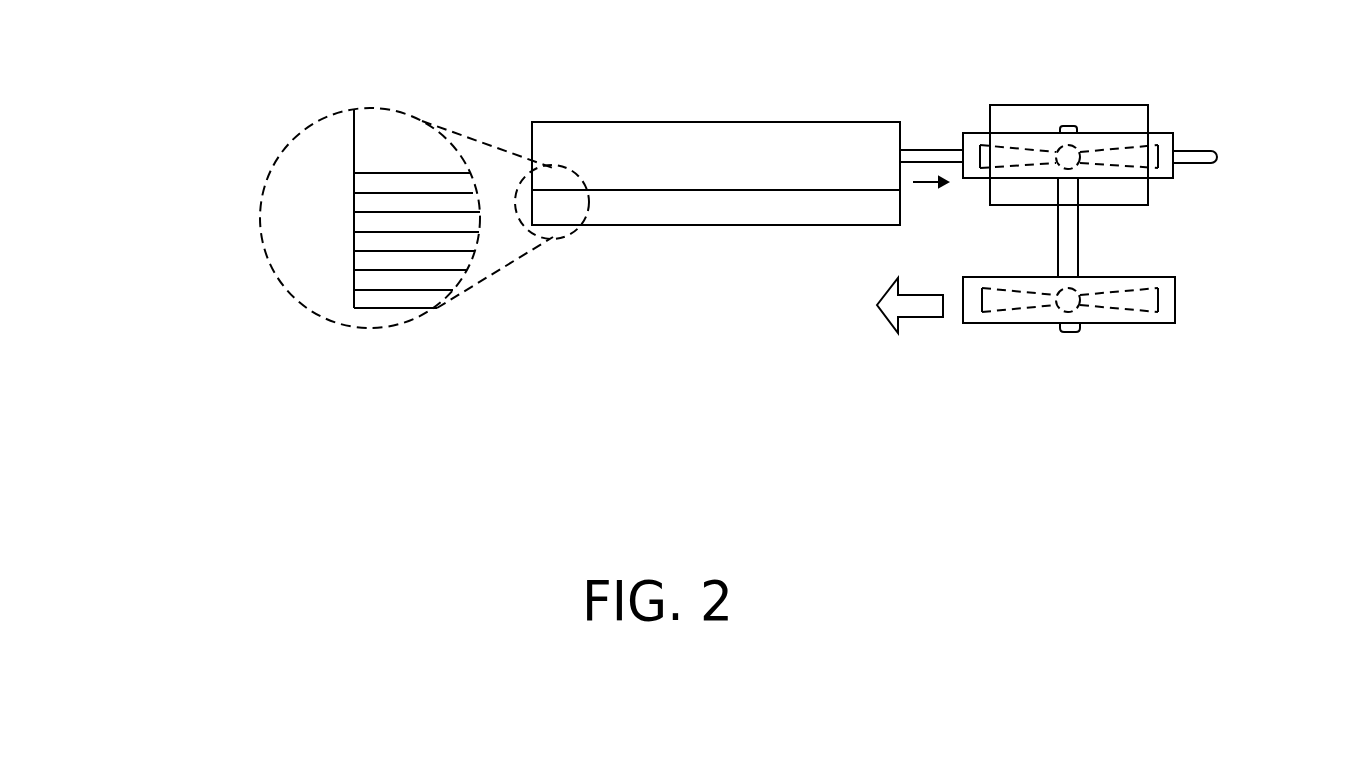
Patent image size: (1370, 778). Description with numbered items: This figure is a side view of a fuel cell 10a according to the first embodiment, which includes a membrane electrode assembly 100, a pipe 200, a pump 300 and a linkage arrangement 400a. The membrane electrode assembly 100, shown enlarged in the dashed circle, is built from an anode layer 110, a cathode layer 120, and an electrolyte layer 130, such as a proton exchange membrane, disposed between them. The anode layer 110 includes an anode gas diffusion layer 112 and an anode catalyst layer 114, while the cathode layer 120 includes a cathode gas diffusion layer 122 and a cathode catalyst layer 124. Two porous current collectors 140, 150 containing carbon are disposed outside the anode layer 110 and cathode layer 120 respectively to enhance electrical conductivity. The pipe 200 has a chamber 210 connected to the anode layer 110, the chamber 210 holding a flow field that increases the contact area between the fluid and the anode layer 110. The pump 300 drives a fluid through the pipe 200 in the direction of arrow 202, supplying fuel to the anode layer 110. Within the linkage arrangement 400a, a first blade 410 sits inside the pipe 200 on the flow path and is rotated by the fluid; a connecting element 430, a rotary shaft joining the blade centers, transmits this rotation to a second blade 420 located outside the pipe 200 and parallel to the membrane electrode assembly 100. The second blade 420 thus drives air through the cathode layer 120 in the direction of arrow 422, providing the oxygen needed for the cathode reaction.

The fuel cell 10a is at (1072, 421).
The membrane electrode assembly 100 is at (118, 122).
The anode layer 110 is at (182, 162).
The anode gas diffusion layer 112 is at (367, 203).
The anode catalyst layer 114 is at (367, 222).
The cathode layer 120 is at (182, 287).
The cathode gas diffusion layer 122 is at (367, 278).
The cathode catalyst layer 124 is at (367, 258).
The electrolyte layer 130 is at (367, 240).
The collector 140 is at (367, 183).
The collector 150 is at (367, 297).
The pipe 200 is at (920, 152).
The arrow 202 is at (932, 178).
The chamber 210 is at (400, 153).
The pump 300 is at (1131, 117).
The linkage arrangement 400a is at (1161, 244).
The first blade 410 is at (1175, 178).
The second blade 420 is at (1175, 300).
The arrow 422 is at (918, 322).
The connecting element 430 is at (1076, 333).